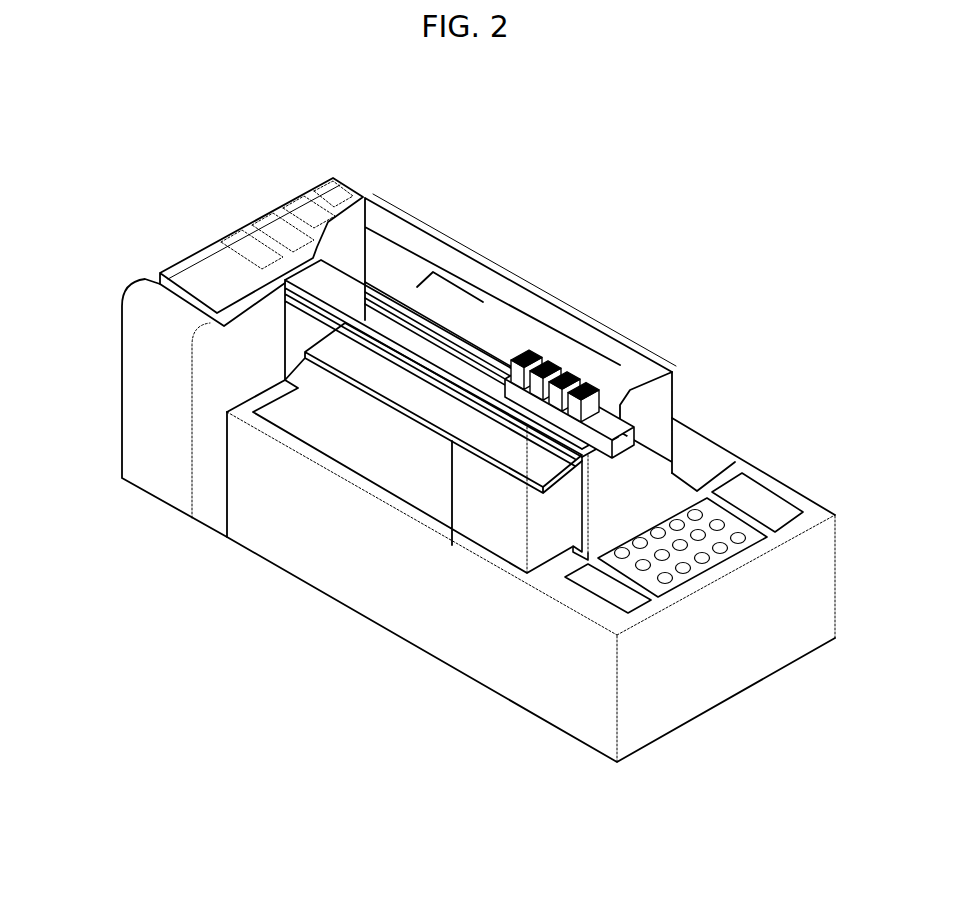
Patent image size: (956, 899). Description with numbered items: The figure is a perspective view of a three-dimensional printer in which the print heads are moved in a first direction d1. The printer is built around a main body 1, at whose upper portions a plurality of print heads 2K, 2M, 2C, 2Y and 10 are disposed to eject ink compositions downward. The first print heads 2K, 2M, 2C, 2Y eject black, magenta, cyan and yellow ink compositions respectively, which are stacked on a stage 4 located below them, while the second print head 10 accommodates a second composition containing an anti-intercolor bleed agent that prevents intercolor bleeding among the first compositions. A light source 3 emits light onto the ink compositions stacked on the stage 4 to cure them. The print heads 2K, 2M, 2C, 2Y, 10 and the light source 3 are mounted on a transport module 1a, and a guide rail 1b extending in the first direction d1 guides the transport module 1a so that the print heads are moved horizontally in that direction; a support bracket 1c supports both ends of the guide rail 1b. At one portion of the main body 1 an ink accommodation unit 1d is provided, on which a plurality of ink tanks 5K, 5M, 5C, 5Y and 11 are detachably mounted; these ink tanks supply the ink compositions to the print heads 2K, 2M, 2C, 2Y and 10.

The main body 1 is at (363, 637).
The transport module 1a is at (673, 430).
The guide rail 1b is at (443, 323).
The support bracket 1c is at (672, 395).
The ink accommodation unit 1d is at (153, 395).
The print head 2K is at (540, 360).
The print head 2M is at (560, 370).
The print head 2C is at (580, 381).
The print head 2Y is at (600, 391).
The light source 3 is at (673, 393).
The stage 4 is at (417, 390).
The ink tank 5K is at (243, 247).
The ink tank 5M is at (273, 225).
The ink tank 5C is at (302, 210).
The ink tank 5Y is at (340, 197).
The second print head 10 is at (601, 347).
The ink tank 11 is at (246, 217).
The first direction d1 is at (511, 346).